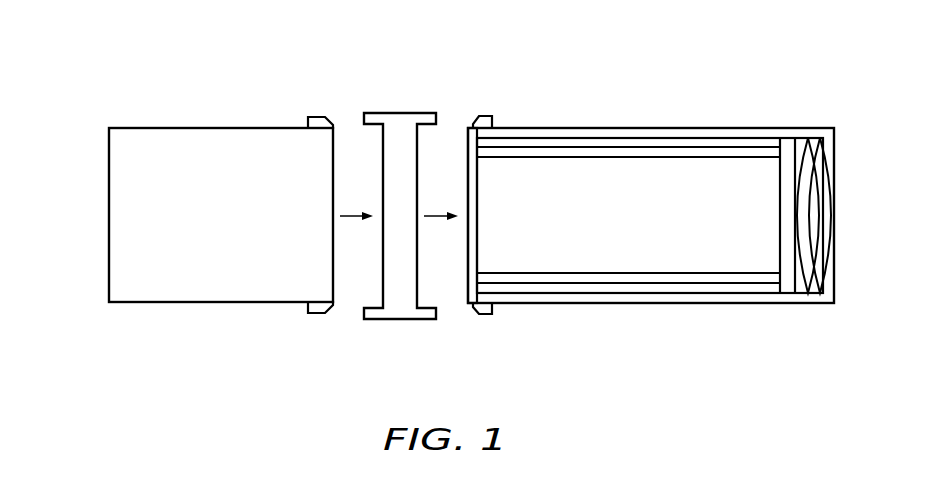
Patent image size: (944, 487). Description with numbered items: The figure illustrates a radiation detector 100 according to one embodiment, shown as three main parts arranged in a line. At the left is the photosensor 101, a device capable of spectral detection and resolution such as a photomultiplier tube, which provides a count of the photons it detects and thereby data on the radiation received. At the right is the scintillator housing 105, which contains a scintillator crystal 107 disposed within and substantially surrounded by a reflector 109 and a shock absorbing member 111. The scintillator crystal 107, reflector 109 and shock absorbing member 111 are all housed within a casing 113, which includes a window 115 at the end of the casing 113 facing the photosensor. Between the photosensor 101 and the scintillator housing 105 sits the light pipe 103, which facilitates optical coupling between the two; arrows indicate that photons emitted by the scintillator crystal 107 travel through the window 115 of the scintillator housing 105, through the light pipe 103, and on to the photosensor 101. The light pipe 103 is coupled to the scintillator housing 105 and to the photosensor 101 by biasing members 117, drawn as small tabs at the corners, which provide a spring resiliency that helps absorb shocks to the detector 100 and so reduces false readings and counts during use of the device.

The radiation detector 100 is at (114, 64).
The photosensor 101 is at (173, 303).
The light pipe 103 is at (398, 320).
The scintillator housing 105 is at (629, 222).
The scintillator crystal 107 is at (634, 226).
The reflector 109 is at (716, 151).
The shock absorbing member 111 is at (627, 143).
The casing 113 is at (560, 128).
The window 115 is at (466, 143).
The biasing members 117 is at (318, 117).